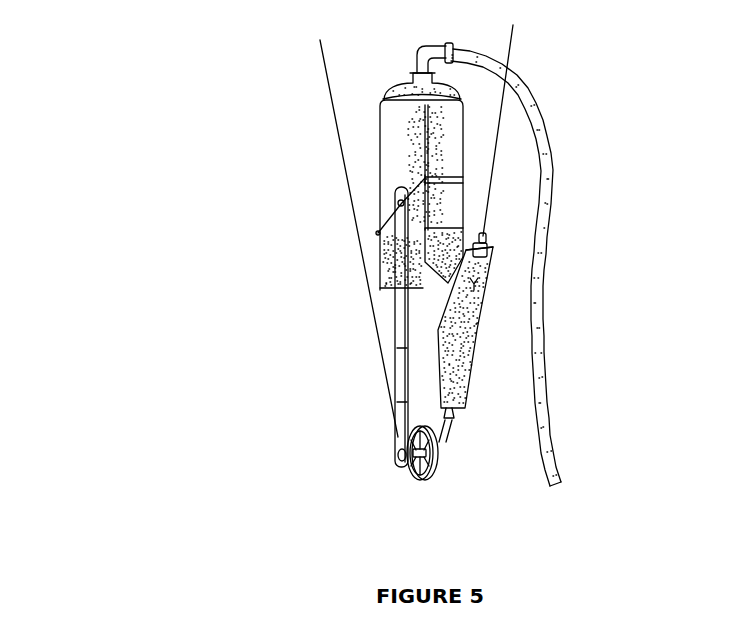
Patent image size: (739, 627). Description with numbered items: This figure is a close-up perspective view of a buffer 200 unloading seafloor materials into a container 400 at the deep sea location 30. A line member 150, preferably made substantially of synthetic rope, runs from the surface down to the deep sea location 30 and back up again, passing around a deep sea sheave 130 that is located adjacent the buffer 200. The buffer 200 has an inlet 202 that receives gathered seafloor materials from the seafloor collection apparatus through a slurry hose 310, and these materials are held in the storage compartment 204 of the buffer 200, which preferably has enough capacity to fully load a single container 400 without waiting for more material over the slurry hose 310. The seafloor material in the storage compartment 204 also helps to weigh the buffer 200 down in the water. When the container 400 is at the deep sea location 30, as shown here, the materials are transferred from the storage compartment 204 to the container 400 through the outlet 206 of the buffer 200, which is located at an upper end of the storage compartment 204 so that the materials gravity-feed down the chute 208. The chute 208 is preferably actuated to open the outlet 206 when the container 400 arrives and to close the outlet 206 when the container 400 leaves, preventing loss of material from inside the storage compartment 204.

The deep sea location 30 is at (128, 277).
The deep sea sheave 130 is at (410, 481).
The line member 150 is at (320, 60).
The buffer 200 is at (380, 144).
The inlet 202 is at (447, 84).
The storage compartment 204 is at (402, 158).
The outlet 206 is at (455, 218).
The chute 208 is at (428, 278).
The slurry hose 310 is at (546, 392).
The container 400 is at (483, 300).